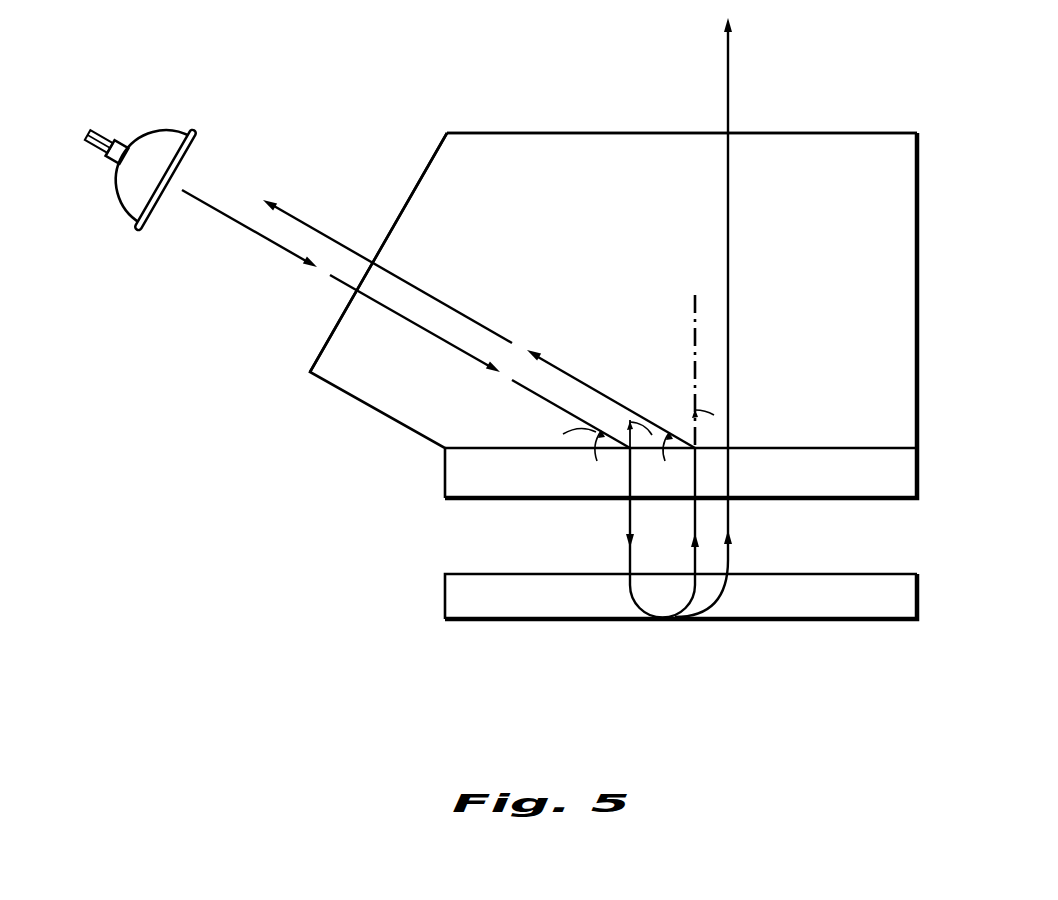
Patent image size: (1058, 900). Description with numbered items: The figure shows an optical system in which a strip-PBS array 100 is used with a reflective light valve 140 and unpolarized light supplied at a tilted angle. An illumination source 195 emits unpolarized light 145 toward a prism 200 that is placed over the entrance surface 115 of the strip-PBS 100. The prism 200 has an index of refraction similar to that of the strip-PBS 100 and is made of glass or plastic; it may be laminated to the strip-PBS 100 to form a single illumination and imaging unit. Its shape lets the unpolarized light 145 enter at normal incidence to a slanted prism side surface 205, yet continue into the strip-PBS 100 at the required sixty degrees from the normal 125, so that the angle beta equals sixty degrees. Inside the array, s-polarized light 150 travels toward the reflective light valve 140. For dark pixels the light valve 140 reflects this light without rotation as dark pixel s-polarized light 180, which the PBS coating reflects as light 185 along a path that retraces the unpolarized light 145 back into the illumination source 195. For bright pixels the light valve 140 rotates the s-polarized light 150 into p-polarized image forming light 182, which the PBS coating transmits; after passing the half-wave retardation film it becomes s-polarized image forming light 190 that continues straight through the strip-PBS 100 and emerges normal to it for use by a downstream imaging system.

The strip-PBS array 100 is at (455, 475).
The entrance surface 115 is at (850, 450).
The normal 125 is at (693, 310).
The reflective light valve 140 is at (468, 603).
The unpolarized light 145 is at (232, 219).
The s-polarized light 150 is at (628, 564).
The dark pixel s-polarized light 180 is at (694, 563).
The bright pixel p-polarized image forming light 182 is at (730, 562).
The dark pixel s-polarized light reflected from the PBS coating 185 is at (347, 247).
The s-polarized image forming light 190 is at (728, 105).
The illumination source 195 is at (156, 142).
The prism 200 is at (858, 152).
The prism side surface 205 is at (428, 168).